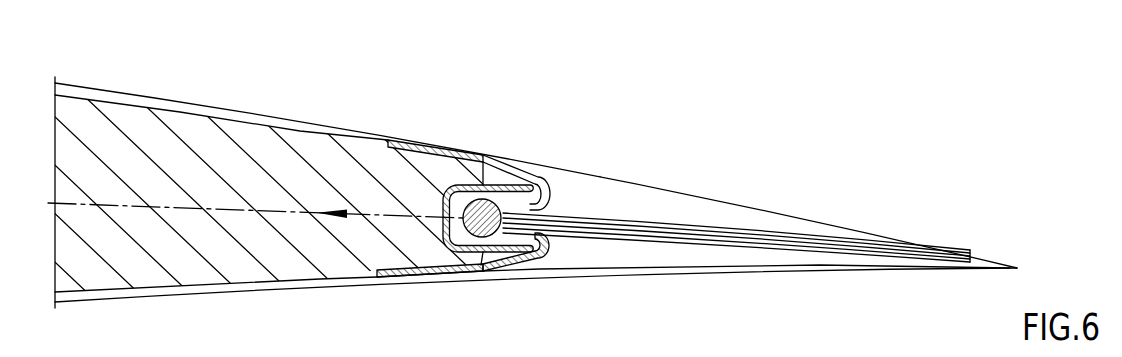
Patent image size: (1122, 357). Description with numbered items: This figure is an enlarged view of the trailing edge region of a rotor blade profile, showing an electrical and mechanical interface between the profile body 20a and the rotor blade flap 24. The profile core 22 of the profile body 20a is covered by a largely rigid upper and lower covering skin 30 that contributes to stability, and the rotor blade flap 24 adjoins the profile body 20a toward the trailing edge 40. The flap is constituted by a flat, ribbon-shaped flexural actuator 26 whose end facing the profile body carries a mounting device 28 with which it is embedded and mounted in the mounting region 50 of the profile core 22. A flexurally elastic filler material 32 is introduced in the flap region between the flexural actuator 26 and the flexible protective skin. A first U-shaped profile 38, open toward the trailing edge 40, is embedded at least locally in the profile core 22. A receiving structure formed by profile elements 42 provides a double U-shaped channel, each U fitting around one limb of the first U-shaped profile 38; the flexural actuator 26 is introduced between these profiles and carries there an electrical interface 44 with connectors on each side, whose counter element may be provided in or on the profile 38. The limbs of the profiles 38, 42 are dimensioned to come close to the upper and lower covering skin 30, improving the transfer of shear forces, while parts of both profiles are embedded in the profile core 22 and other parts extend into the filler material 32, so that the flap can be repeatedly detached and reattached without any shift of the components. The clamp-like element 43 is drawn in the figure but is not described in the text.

The profile body 20a is at (305, 114).
The profile core 22 is at (293, 270).
The rotor blade flap 24 is at (729, 181).
The flexural actuator 26 is at (845, 245).
The mounting device 28 is at (436, 285).
The covering skin 30 is at (238, 118).
The filler material 32 is at (685, 250).
The first U-shaped profile 38 is at (500, 160).
The trailing edge 40 is at (1034, 238).
The profile elements 42 is at (537, 265).
The clamp 43 is at (506, 262).
The electrical interface 44 is at (485, 238).
The mounting region 50 is at (478, 136).